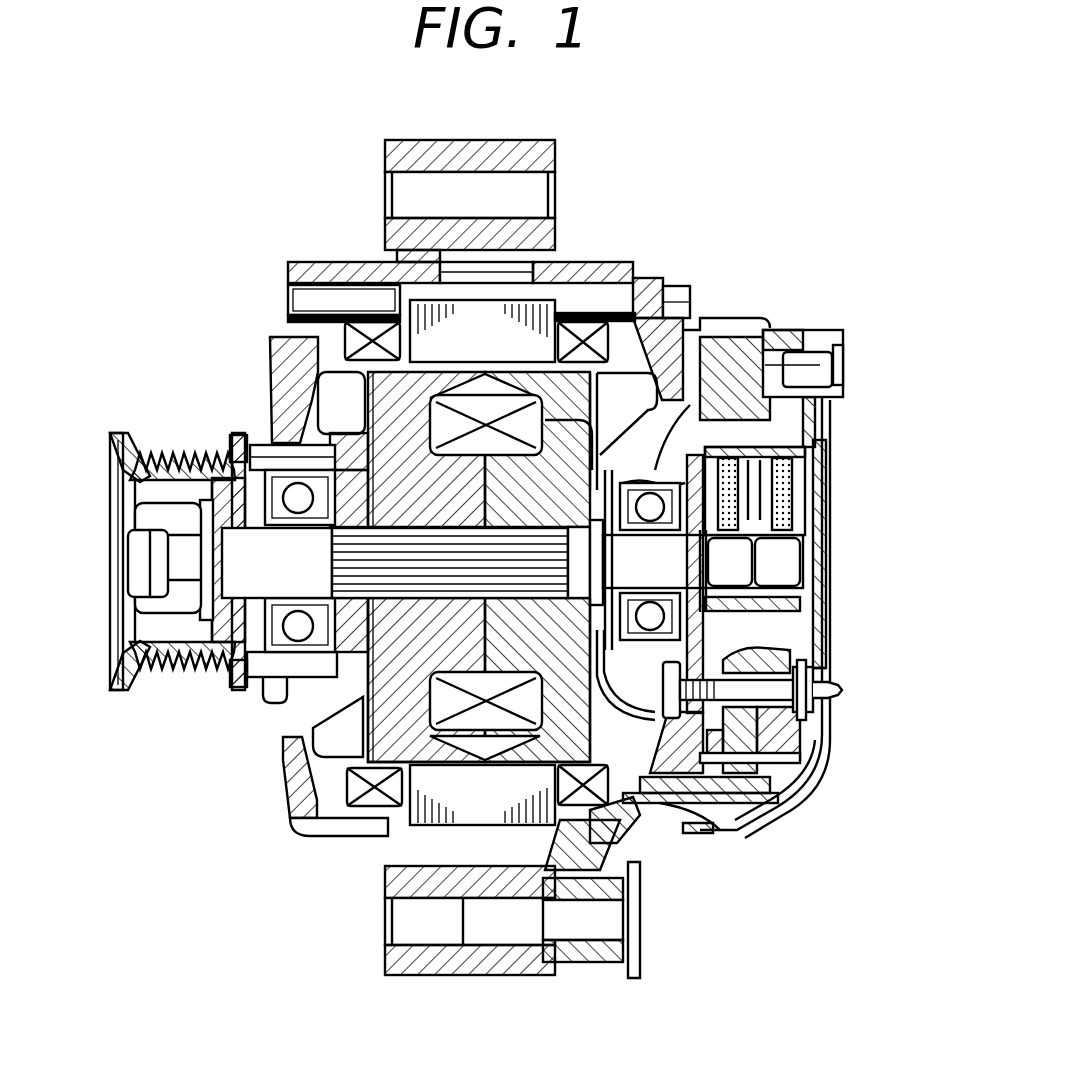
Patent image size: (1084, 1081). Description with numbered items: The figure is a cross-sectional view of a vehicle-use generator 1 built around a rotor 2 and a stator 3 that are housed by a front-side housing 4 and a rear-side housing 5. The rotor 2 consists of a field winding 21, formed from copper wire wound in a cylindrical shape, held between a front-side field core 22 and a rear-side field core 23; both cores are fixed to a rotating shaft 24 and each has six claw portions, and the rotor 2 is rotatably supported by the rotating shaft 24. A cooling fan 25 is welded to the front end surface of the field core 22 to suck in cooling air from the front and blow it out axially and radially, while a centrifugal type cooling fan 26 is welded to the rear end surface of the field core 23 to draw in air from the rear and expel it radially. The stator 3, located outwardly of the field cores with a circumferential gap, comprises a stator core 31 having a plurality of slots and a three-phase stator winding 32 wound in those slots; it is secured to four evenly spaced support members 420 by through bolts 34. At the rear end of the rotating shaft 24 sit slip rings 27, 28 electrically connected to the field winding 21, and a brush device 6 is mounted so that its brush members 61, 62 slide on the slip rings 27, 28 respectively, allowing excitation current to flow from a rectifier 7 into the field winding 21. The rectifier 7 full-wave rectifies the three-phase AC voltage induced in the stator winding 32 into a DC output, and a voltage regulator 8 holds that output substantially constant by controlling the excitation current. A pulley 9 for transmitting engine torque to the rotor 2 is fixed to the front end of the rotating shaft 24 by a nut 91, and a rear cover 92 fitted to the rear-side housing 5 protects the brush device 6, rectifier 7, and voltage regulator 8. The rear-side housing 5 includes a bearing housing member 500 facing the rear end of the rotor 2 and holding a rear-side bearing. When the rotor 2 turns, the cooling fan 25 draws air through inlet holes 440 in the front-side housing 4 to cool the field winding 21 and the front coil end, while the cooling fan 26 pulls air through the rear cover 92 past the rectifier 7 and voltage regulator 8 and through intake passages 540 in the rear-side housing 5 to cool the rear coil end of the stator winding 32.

The vehicle-use generator 1 is at (687, 108).
The rotor 2 is at (328, 350).
The stator 3 is at (548, 318).
The stator core 31 is at (482, 335).
The three-phase stator winding 32 is at (378, 330).
The through bolts 34 is at (650, 315).
The front-side housing 4 is at (290, 385).
The support members 420 is at (298, 272).
The inlet holes 440 is at (335, 737).
The rear-side housing 5 is at (680, 318).
The bearing housing member 500 is at (652, 478).
The intake passages 540 is at (677, 434).
The brush device 6 is at (820, 462).
The brush member 61 is at (812, 498).
The brush member 62 is at (820, 522).
The slip ring 27 is at (730, 556).
The slip ring 28 is at (786, 578).
The rectifier 7 is at (812, 742).
The voltage regulator 8 is at (790, 330).
The pulley 9 is at (112, 650).
The nut 91 is at (160, 524).
The rear cover 92 is at (745, 825).
The field winding 21 is at (480, 690).
The front-side field core 22 is at (405, 735).
The rear-side field core 23 is at (570, 737).
The rotating shaft 24 is at (288, 712).
The cooling fan 25 is at (300, 752).
The centrifugal type cooling fan 26 is at (622, 730).